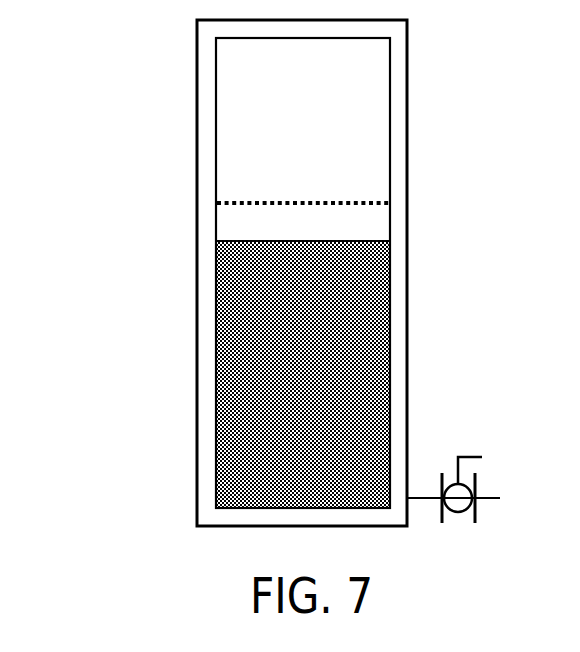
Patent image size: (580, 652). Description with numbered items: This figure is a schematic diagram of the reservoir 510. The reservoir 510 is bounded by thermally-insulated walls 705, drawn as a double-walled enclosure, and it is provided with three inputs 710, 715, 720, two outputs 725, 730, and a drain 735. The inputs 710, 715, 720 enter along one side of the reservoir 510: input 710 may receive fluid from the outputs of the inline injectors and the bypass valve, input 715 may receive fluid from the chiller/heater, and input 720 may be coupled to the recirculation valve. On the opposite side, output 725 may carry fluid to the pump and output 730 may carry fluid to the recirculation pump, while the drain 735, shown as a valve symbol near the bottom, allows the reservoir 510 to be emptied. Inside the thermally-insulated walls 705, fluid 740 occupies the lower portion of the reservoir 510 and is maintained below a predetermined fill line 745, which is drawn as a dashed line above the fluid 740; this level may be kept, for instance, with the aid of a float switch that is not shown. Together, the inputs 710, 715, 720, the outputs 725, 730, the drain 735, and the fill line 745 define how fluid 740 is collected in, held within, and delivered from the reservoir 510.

The reservoir 510 is at (122, 337).
The thermally-insulated walls 705 is at (397, 152).
The input 710 is at (197, 57).
The input 715 is at (197, 121).
The input 720 is at (197, 185).
The output 725 is at (407, 347).
The output 730 is at (407, 412).
The drain 735 is at (461, 538).
The fluid 740 is at (303, 374).
The predetermined fill line 745 is at (270, 201).